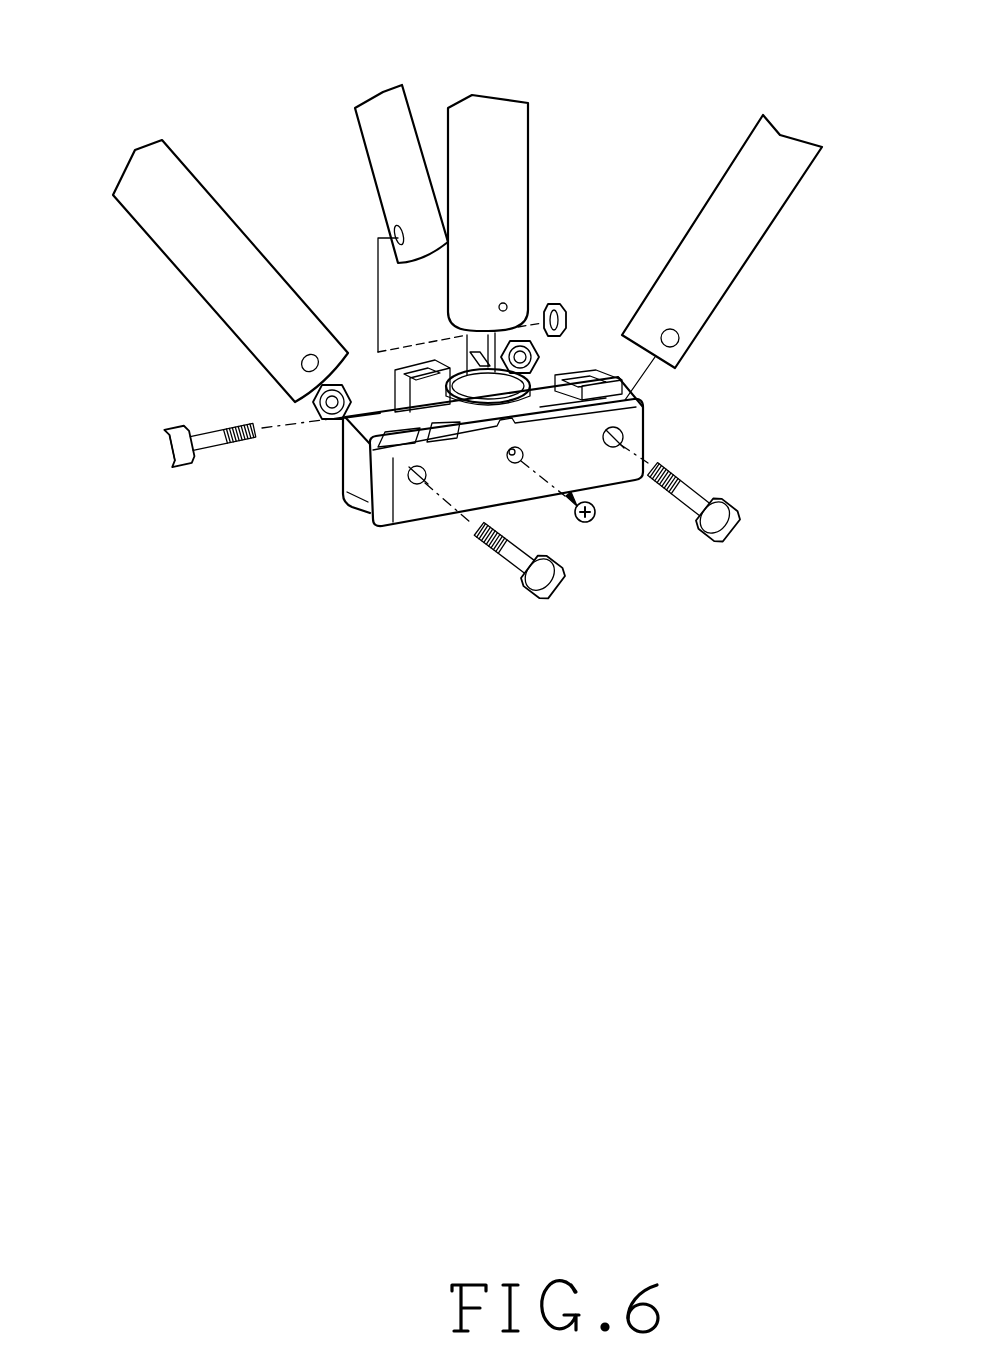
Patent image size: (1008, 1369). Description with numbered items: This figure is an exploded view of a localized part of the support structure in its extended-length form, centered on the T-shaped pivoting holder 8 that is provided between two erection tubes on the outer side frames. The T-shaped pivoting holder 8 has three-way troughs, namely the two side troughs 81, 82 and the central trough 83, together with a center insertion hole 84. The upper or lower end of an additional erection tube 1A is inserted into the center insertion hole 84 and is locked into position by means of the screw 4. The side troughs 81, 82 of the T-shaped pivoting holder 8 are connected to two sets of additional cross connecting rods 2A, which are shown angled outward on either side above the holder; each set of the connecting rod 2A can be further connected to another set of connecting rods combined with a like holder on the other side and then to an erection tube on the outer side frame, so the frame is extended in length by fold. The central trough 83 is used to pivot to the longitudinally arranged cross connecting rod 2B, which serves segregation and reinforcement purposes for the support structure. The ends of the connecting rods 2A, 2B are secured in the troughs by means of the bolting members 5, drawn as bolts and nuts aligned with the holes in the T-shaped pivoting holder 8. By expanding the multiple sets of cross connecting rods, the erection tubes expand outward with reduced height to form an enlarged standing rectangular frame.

The additional erection tube 1A is at (498, 158).
The additional cross connecting rod 2A is at (208, 283).
The longitudinally arranged cross connecting rod 2B is at (390, 123).
The screw 4 is at (592, 519).
The bolting member 5 is at (513, 350).
The T-shaped pivoting holder 8 is at (600, 472).
The side trough 81 is at (587, 375).
The side trough 82 is at (355, 452).
The central trough 83 is at (458, 363).
The center insertion hole 84 is at (473, 392).